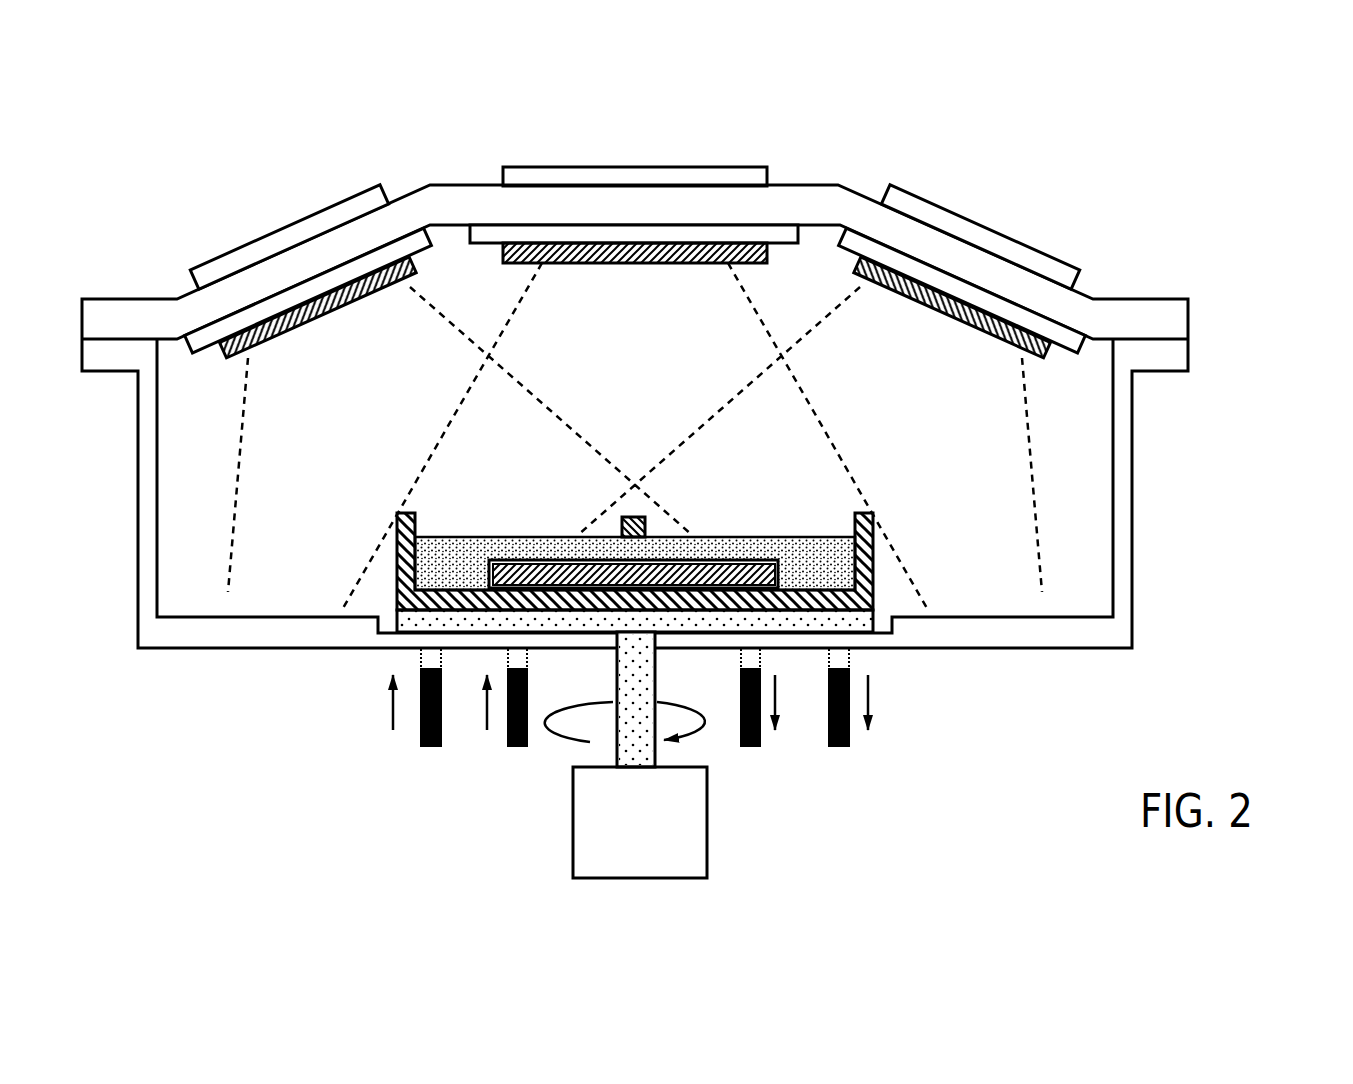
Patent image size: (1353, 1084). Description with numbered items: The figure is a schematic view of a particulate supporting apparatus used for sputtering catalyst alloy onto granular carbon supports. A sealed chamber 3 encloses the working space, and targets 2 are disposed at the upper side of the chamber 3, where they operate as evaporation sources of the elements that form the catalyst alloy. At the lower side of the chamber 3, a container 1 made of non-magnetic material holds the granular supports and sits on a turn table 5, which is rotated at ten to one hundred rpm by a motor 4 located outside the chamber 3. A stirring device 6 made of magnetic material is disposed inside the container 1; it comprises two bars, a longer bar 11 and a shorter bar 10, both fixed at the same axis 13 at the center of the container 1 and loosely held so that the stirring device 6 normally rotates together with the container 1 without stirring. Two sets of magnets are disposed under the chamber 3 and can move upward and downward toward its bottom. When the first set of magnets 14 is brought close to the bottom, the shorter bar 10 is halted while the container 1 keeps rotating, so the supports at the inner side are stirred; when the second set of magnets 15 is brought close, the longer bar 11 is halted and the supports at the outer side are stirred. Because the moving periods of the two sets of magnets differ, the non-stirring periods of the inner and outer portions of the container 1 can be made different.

The container 1 is at (393, 532).
The targets 2 is at (833, 285).
The chamber 3 is at (1128, 440).
The motor 4 is at (640, 822).
The turn table 5 is at (882, 612).
The stirring device 6 is at (810, 559).
The shorter bar 10 is at (752, 585).
The longer bar 11 is at (812, 533).
The axis 13 is at (648, 511).
The first set of magnets 14 is at (517, 753).
The second set of magnets 15 is at (421, 746).